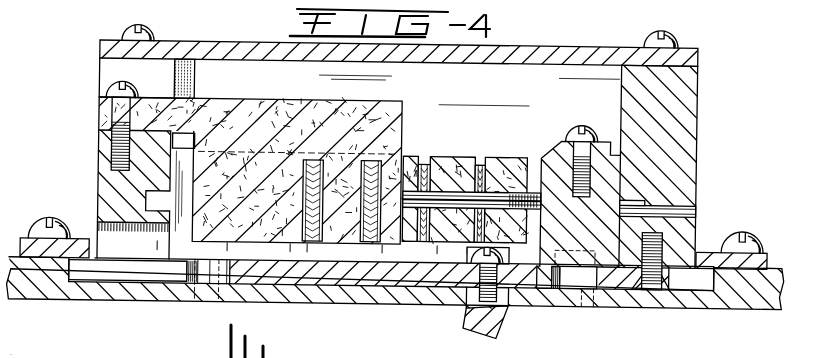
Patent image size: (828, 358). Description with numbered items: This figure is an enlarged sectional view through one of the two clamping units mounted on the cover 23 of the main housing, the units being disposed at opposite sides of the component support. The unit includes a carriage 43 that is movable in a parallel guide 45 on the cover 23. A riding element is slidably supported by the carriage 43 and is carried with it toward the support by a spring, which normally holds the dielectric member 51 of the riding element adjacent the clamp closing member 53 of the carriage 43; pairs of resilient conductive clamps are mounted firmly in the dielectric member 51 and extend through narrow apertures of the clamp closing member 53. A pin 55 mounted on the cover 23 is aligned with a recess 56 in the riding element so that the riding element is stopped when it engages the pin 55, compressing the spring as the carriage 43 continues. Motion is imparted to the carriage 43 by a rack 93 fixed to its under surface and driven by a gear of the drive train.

The carriage 43 is at (103, 76).
The clamp closing member 53 is at (402, 128).
The dielectric member 51 is at (531, 157).
The guide 45 is at (79, 238).
The recess 56 is at (191, 268).
The pin 55 is at (214, 299).
The rack 93 is at (469, 314).
The cover 23 is at (755, 303).